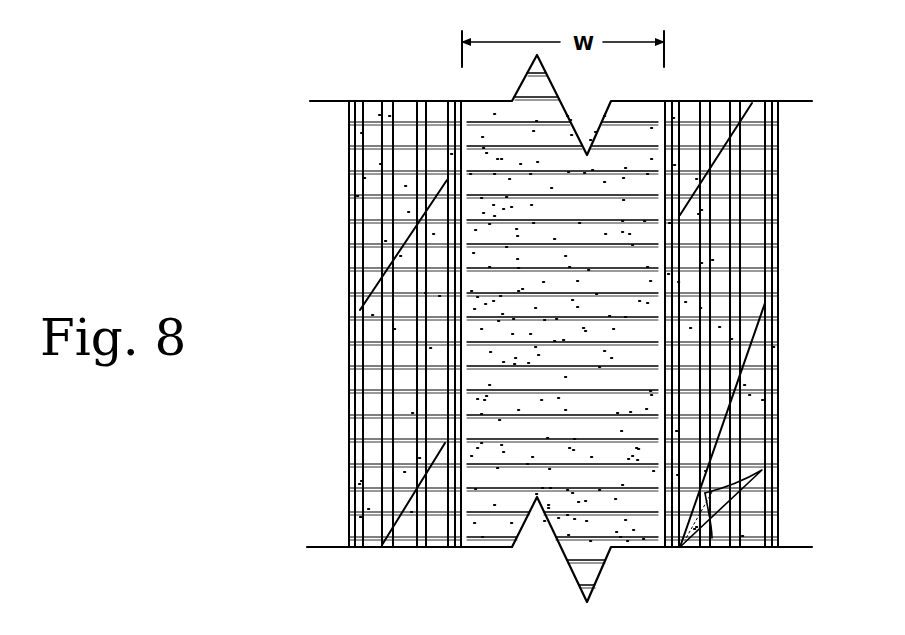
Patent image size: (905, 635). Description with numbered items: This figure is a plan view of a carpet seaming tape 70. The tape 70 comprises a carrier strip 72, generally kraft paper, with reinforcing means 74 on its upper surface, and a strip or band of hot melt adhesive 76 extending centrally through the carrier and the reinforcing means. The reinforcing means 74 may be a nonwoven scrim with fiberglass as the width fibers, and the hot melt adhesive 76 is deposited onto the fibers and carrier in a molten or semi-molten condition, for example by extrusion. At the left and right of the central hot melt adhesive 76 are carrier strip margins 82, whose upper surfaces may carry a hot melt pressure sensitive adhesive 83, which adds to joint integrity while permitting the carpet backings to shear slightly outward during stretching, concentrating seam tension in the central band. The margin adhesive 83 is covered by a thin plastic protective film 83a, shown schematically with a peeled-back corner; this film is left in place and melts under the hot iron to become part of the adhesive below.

The carpet seaming tape 70 is at (347, 247).
The carrier strip 72 is at (780, 390).
The reinforcing means 74 is at (572, 222).
The hot melt adhesive 76 is at (490, 162).
The carrier strip margins 82 is at (362, 503).
The pressure sensitive adhesive 83 is at (360, 310).
The protective film 83a is at (715, 530).